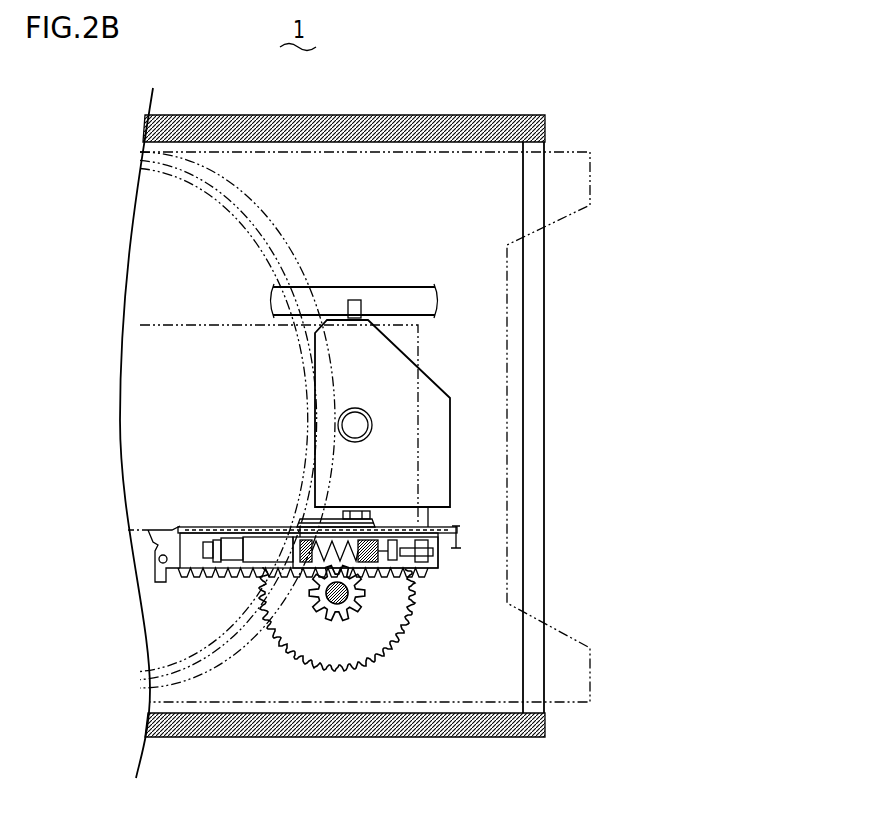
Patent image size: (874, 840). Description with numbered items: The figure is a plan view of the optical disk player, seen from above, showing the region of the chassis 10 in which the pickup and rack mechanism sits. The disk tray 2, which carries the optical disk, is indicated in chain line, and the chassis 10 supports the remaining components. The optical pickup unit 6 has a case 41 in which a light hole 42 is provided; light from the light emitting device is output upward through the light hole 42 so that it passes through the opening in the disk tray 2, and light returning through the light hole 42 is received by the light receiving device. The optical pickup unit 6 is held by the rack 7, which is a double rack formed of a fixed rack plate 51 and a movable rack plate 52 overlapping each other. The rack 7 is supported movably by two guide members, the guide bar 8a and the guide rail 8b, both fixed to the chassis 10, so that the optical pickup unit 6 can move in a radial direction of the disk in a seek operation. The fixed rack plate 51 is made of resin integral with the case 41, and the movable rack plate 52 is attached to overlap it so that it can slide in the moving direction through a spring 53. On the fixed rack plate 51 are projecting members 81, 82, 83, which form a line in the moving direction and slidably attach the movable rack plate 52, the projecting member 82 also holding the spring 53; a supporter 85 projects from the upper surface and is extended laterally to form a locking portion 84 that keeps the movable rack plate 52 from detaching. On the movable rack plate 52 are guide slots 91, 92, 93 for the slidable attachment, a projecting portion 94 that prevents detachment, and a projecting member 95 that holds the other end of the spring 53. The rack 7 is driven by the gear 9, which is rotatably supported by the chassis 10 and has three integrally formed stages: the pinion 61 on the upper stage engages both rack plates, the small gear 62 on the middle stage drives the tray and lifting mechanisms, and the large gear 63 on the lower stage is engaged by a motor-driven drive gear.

The disk tray 2 is at (598, 180).
The optical pickup unit 6 is at (458, 437).
The rack 7 is at (218, 582).
The guide bar 8a is at (447, 533).
The guide rail 8b is at (385, 298).
The gear 9 is at (280, 650).
The chassis 10 is at (317, 123).
The case 41 is at (404, 380).
The light hole 42 is at (353, 422).
The fixed rack plate 51 is at (185, 570).
The movable rack plate 52 is at (190, 542).
The spring 53 is at (312, 521).
The pinion 61 is at (360, 608).
The small gear 62 is at (337, 623).
The large gear 63 is at (355, 637).
The projecting member 81 is at (203, 548).
The projecting member 82 is at (252, 532).
The projecting member 83 is at (388, 566).
The locking portion 84 is at (360, 517).
The supporter 85 is at (352, 517).
The guide slot 91 is at (226, 540).
The guide slot 92 is at (320, 529).
The guide slot 93 is at (430, 557).
The projecting portion 94 is at (330, 519).
The projecting member 95 is at (351, 593).